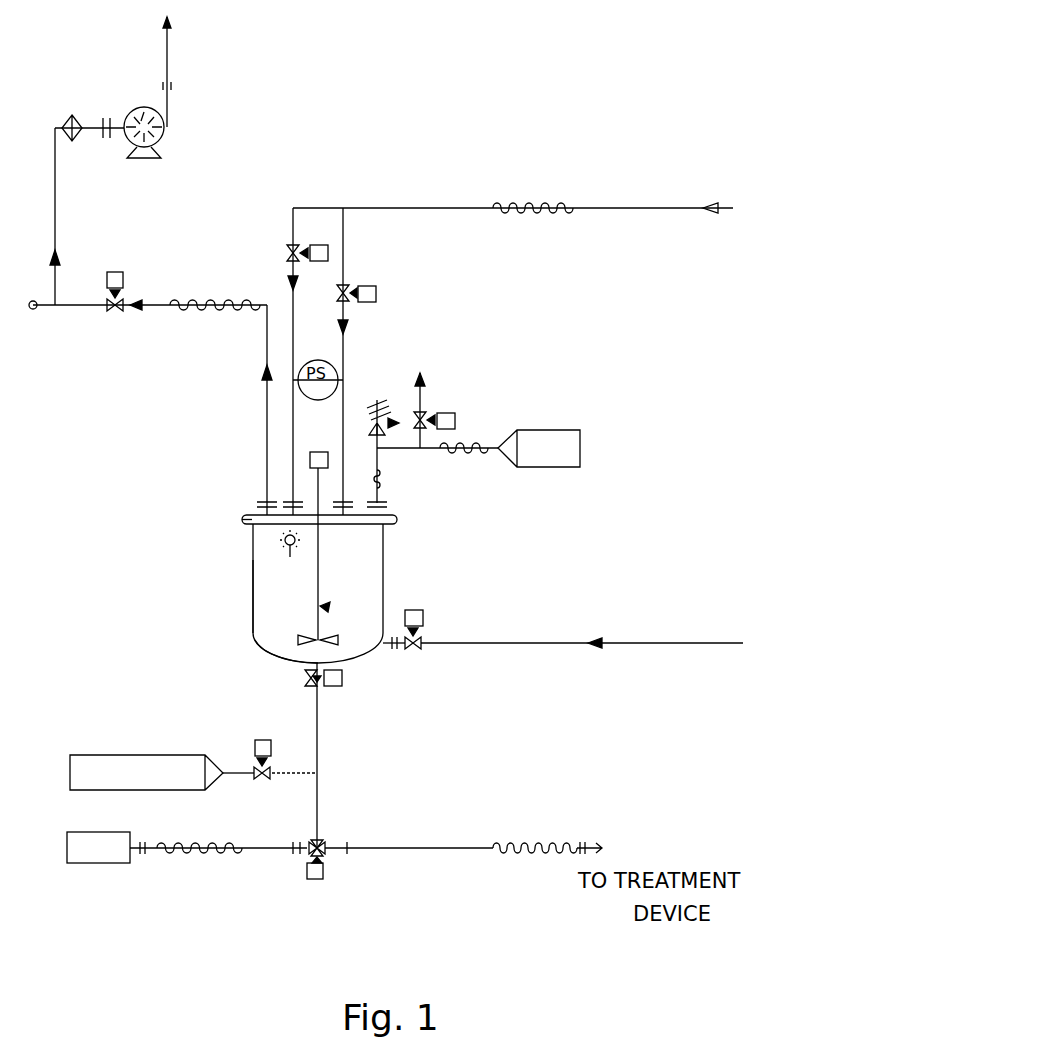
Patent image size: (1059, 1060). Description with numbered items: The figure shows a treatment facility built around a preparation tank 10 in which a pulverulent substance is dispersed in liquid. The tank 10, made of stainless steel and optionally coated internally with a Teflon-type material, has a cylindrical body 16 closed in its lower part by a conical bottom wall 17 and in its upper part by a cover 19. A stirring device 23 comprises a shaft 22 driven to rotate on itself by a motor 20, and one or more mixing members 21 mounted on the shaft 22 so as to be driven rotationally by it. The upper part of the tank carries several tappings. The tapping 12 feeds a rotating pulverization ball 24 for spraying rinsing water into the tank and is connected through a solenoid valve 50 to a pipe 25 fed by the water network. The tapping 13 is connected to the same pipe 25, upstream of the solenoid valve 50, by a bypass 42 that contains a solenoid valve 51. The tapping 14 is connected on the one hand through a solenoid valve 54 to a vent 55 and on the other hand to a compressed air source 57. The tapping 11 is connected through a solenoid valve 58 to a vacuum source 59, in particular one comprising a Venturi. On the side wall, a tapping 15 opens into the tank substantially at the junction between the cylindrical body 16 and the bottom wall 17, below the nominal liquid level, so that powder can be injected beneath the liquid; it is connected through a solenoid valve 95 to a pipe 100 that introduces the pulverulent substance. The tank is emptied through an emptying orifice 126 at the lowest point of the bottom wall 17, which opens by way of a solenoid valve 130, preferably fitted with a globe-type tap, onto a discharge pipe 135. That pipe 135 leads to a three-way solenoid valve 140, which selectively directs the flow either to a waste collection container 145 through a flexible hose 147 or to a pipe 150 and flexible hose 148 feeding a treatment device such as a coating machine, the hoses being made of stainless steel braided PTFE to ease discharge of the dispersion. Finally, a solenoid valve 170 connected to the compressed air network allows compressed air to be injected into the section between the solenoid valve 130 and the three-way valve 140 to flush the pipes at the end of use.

The preparation tank 10 is at (262, 557).
The tapping 11 is at (253, 515).
The tapping 12 is at (290, 500).
The tapping 13 is at (343, 522).
The tapping 14 is at (397, 500).
The tapping 15 is at (385, 630).
The cylindrical body 16 is at (253, 600).
The conical bottom wall 17 is at (257, 640).
The cover 19 is at (242, 520).
The motor 20 is at (319, 452).
The mixing member 21 is at (300, 643).
The shaft 22 is at (318, 582).
The stirring device 23 is at (329, 612).
The rotating pulverization ball 24 is at (288, 557).
The pipe 25 is at (418, 208).
The bypass 42 is at (342, 350).
The solenoid valve 50 is at (290, 250).
The solenoid valve 51 is at (366, 287).
The solenoid valve 54 is at (446, 413).
The vent 55 is at (420, 373).
The compressed air source 57 is at (530, 432).
The solenoid valve 58 is at (115, 272).
The vacuum source 59 is at (143, 107).
The solenoid valve 95 is at (425, 615).
The pipe 100 is at (533, 643).
The emptying orifice 126 is at (337, 755).
The solenoid valve 130 is at (306, 684).
The discharge pipe 135 is at (320, 767).
The three-way solenoid valve 140 is at (305, 867).
The waste collection container 145 is at (97, 852).
The flexible hose 147 is at (197, 855).
The flexible hose 148 is at (530, 853).
The pipe 150 is at (410, 848).
The solenoid valve 170 is at (258, 780).